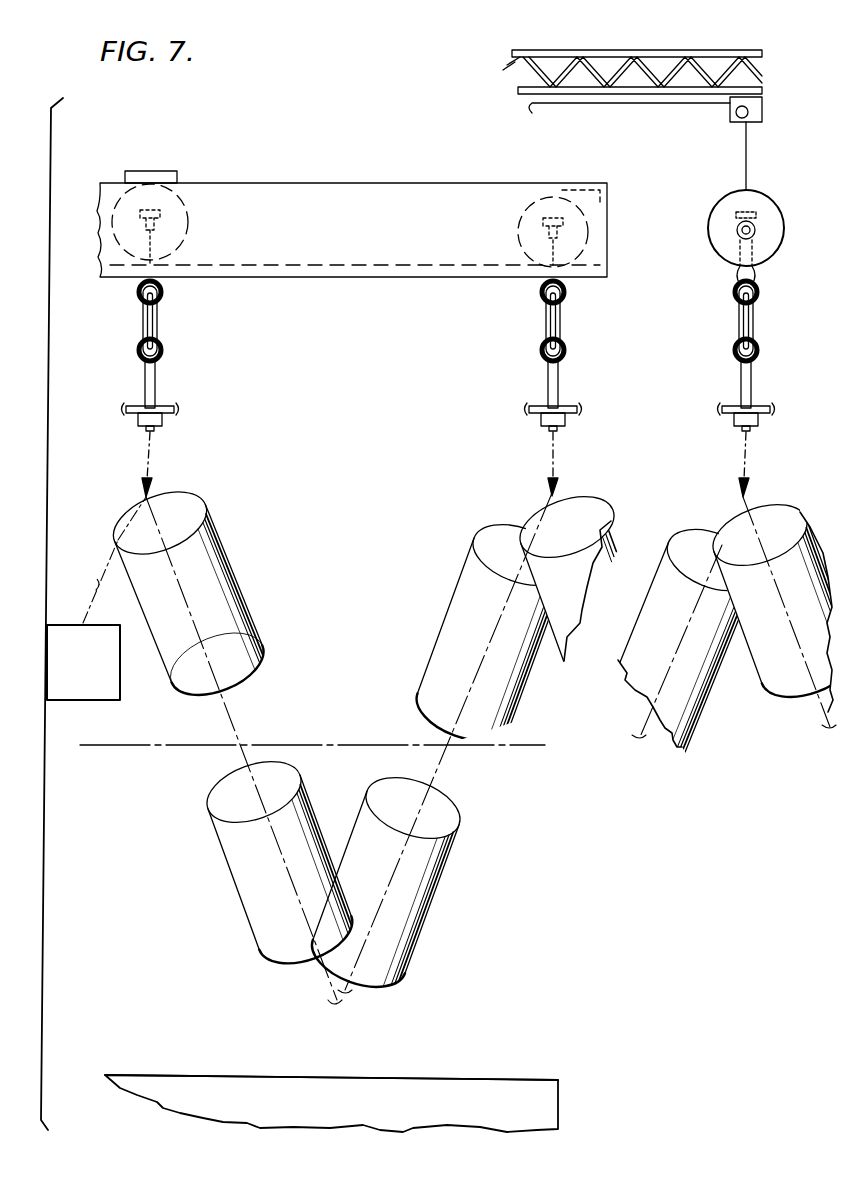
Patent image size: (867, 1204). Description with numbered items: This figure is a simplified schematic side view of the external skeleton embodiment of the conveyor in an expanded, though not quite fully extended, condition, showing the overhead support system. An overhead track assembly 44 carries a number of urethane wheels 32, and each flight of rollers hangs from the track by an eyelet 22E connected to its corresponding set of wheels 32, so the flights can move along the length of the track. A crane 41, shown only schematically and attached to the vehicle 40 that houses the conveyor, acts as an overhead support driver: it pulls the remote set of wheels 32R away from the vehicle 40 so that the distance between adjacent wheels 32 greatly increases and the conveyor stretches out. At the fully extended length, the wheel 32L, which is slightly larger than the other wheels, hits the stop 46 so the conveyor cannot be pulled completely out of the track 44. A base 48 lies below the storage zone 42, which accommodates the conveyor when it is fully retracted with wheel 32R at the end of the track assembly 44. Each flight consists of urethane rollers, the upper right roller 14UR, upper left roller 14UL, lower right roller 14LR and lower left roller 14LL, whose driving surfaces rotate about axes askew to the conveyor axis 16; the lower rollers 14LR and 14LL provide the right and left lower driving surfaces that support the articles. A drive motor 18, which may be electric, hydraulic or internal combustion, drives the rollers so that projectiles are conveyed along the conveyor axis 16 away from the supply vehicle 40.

The crane 41 is at (624, 56).
The track assembly 44 is at (322, 184).
The stop 46 is at (574, 190).
The wheel 32L is at (188, 242).
The urethane wheels 32 is at (520, 236).
The remote set of wheels 32R is at (708, 232).
The eyelet 22E is at (138, 348).
The storage zone 42 is at (346, 474).
The upper right roller 14UR is at (224, 582).
The upper left roller 14UL is at (448, 623).
The lower right roller 14LR is at (246, 900).
The lower left roller 14LL is at (426, 904).
The drive motor 18 is at (96, 598).
The conveyor axis 16 is at (120, 744).
The base 48 is at (230, 1075).
The vehicle 40 is at (401, 1110).